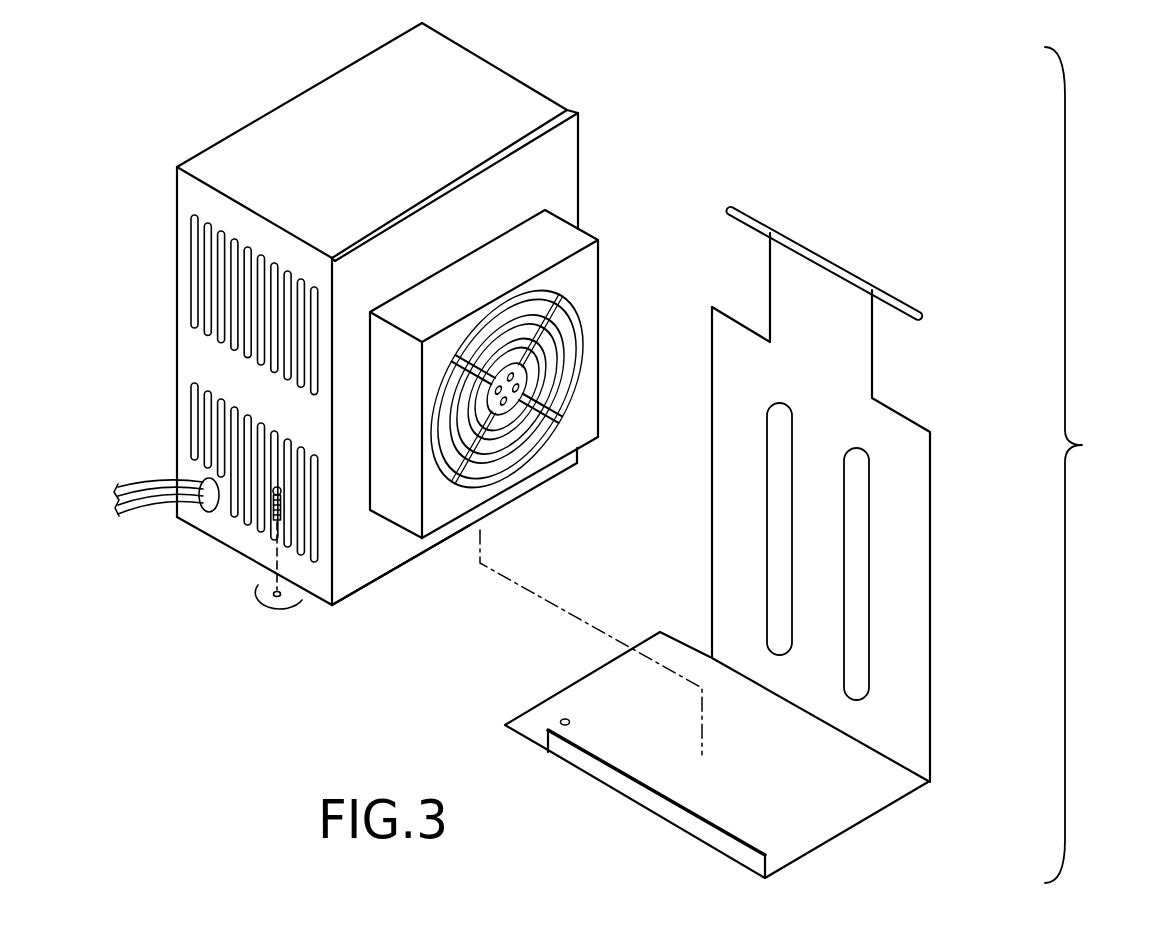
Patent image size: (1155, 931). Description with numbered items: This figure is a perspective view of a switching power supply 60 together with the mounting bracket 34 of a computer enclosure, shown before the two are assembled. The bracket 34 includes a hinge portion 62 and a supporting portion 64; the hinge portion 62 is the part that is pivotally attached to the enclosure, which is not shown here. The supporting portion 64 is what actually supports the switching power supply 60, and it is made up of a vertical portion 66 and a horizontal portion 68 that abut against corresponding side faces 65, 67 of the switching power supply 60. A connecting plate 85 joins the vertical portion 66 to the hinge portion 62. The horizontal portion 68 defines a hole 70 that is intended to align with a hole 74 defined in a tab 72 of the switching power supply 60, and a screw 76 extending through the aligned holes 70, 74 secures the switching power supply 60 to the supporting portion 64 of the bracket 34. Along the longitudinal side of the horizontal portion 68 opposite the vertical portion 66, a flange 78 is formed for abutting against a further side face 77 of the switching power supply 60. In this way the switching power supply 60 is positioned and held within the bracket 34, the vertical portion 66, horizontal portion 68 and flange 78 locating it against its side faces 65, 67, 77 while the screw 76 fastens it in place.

The bracket 34 is at (1089, 465).
The switching power supply 60 is at (230, 108).
The hinge portion 62 is at (905, 278).
The supporting portion 64 is at (950, 576).
The side face 65 is at (176, 352).
The vertical portion 66 is at (725, 477).
The side face 67 is at (379, 582).
The horizontal portion 68 is at (835, 810).
The hole 70 is at (566, 716).
The tab 72 is at (289, 600).
The hole 74 is at (274, 596).
The screw 76 is at (270, 521).
The side face 77 is at (518, 488).
The flange 78 is at (648, 795).
The connecting plate 85 is at (825, 328).